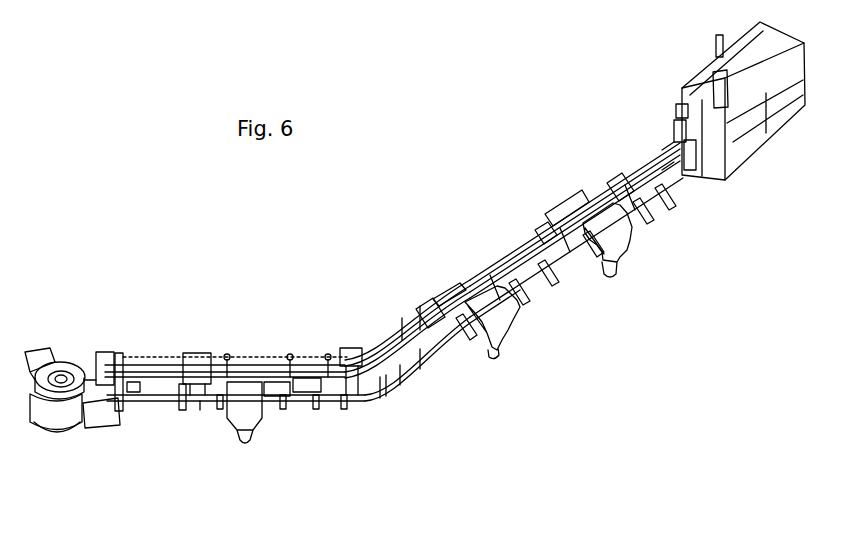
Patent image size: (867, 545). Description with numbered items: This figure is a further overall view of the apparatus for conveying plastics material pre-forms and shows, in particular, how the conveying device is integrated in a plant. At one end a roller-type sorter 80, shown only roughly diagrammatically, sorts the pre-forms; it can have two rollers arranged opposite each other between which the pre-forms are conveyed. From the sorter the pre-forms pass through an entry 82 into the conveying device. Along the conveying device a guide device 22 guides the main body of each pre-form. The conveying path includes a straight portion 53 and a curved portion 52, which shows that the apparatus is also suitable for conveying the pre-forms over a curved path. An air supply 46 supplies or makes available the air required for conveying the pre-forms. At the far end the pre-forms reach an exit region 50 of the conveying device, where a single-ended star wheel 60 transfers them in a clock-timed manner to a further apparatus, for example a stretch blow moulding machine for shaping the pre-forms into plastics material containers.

The roller-type sorter 80 is at (690, 73).
The entry 82 is at (687, 163).
The guide device 22 is at (672, 198).
The air supply 46 is at (613, 252).
The straight portion 53 is at (530, 278).
The curved portion 52 is at (355, 392).
The exit region 50 is at (148, 388).
The single-ended star wheel 60 is at (70, 363).